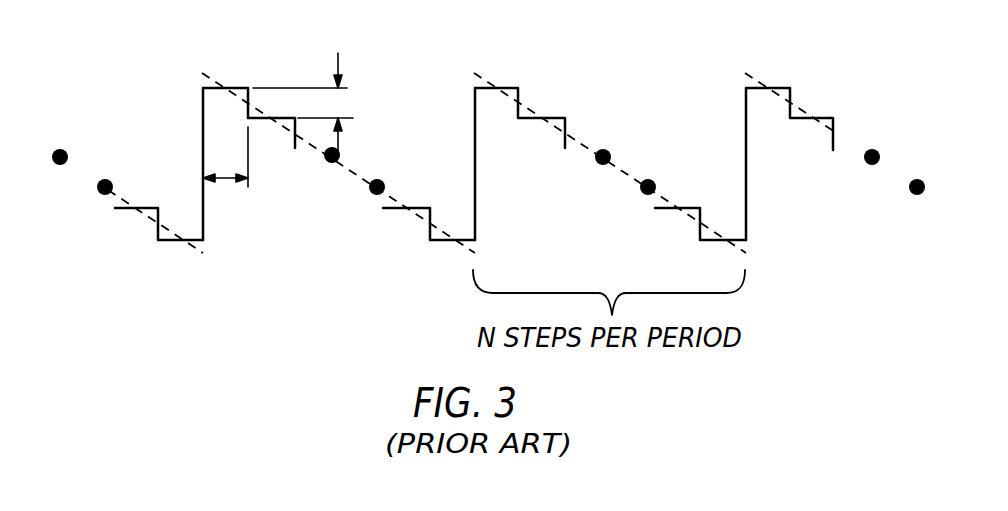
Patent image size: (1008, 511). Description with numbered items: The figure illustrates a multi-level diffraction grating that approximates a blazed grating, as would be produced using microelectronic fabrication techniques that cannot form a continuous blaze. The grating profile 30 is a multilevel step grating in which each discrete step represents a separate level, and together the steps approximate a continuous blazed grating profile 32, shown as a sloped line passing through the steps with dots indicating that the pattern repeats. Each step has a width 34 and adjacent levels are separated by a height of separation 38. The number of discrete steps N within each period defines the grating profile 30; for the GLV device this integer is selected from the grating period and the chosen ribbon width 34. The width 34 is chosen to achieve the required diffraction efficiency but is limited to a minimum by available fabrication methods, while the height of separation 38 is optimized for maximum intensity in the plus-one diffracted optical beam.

The grating profile 30 is at (518, 88).
The continuous blazed grating profile 32 is at (623, 170).
The width L2 34 is at (232, 237).
The height of separation h2 38 is at (368, 82).